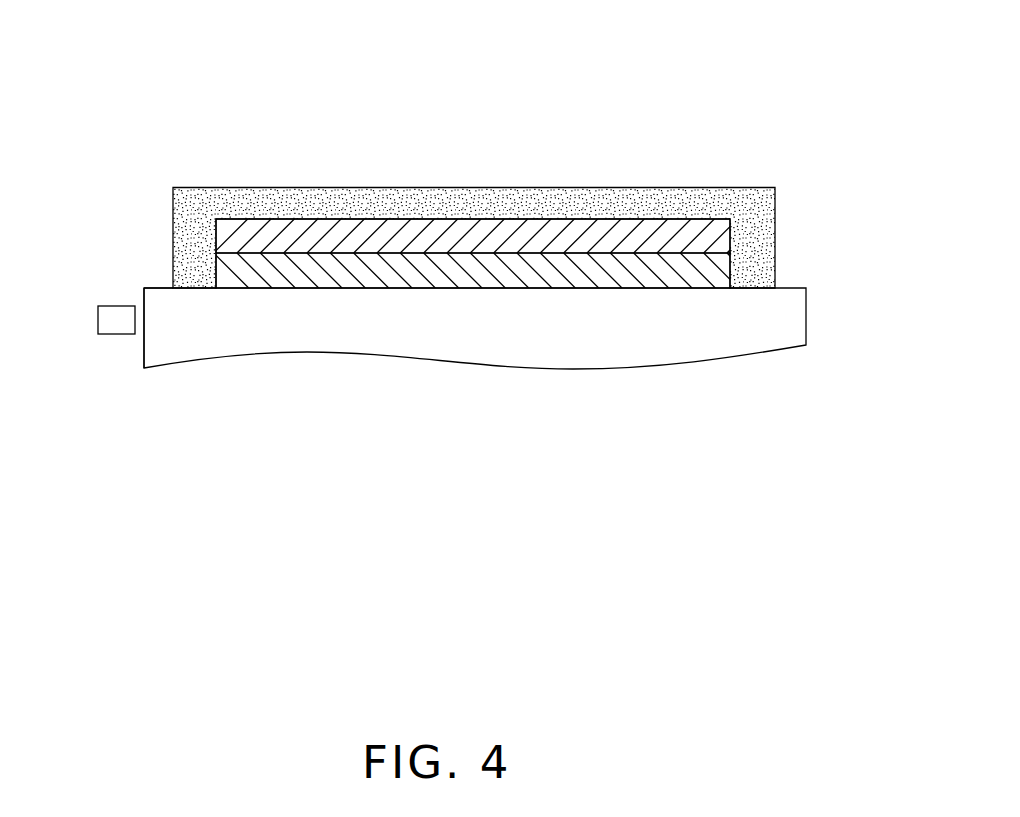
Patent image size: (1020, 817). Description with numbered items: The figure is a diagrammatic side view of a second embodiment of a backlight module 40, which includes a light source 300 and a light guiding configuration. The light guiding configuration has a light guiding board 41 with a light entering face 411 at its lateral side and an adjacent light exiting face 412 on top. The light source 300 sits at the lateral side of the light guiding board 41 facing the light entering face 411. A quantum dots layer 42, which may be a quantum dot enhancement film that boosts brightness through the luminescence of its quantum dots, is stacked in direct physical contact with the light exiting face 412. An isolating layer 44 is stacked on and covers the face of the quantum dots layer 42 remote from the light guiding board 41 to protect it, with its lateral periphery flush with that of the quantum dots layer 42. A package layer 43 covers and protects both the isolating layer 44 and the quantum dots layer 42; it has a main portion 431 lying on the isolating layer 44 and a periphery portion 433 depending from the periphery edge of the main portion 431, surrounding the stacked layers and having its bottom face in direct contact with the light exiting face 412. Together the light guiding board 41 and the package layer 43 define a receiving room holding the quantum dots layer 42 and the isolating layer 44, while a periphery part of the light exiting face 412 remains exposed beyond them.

The backlight module 40 is at (398, 47).
The light guiding board 41 is at (806, 322).
The light entering face 411 is at (142, 298).
The light exiting face 412 is at (158, 286).
The quantum dots layer 42 is at (731, 280).
The package layer 43 is at (522, 218).
The main portion 431 is at (487, 195).
The periphery portion 433 is at (765, 235).
The isolating layer 44 is at (731, 220).
The light source 300 is at (115, 336).